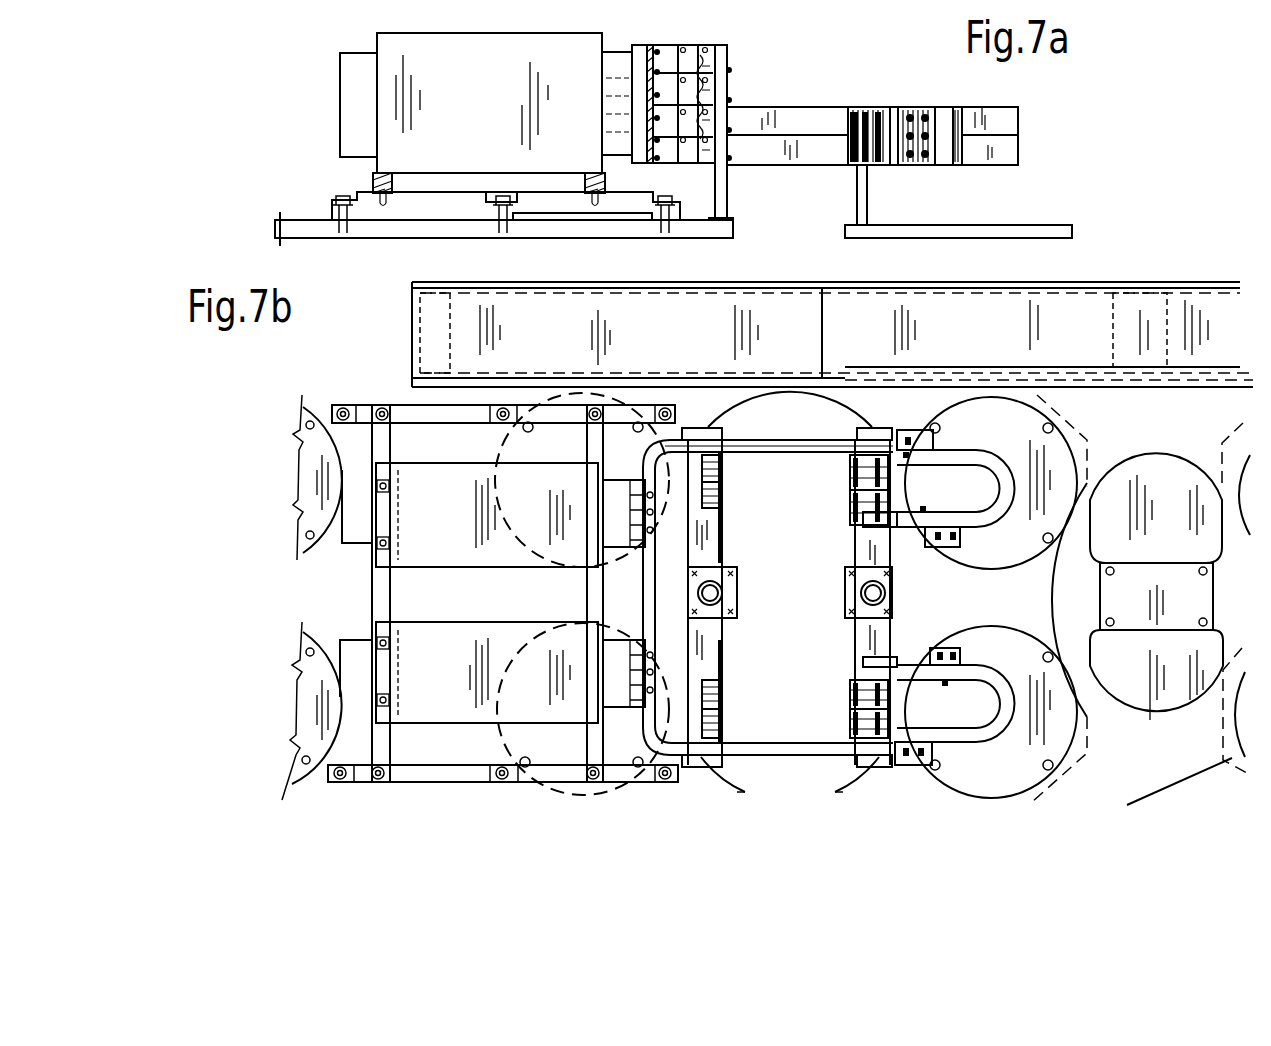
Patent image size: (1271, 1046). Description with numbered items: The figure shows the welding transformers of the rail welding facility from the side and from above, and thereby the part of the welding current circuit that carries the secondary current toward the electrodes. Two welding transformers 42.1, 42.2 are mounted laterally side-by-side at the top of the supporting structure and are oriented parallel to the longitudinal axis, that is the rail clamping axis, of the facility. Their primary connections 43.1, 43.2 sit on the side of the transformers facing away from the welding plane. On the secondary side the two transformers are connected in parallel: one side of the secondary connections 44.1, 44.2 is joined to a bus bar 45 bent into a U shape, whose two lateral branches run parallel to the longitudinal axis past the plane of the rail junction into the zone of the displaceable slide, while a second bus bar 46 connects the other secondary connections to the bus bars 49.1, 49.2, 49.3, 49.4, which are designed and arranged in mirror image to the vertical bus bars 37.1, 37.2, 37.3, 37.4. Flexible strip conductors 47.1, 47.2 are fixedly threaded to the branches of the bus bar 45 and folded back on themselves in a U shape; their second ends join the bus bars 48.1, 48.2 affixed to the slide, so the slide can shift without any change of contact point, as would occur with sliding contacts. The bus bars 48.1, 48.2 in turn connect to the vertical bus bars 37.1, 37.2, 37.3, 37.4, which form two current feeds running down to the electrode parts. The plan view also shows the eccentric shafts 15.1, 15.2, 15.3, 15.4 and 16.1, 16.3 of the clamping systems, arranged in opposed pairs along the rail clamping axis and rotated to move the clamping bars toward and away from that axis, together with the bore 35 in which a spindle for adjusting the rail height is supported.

In FIG. 7B, the eccentric shaft 15.1 is at (295, 782).
In FIG. 7B, the eccentric shaft 15.2 is at (500, 735).
In FIG. 7B, the eccentric shaft 15.3 is at (305, 410).
In FIG. 7B, the eccentric shaft 15.4 is at (500, 447).
In FIG. 7B, the eccentric shaft 16.1 is at (998, 762).
In FIG. 7B, the eccentric shaft 16.3 is at (972, 400).
In FIG. 7B, the bore 35 is at (850, 586).
In FIG. 7A, the bus bar 37.1 is at (727, 58).
In FIG. 7B, the bus bar 37.1 is at (850, 723).
In FIG. 7B, the bus bar 37.2 is at (852, 693).
In FIG. 7B, the bus bar 37.3 is at (852, 497).
In FIG. 7B, the bus bar 37.4 is at (852, 463).
In FIG. 7A, the welding transformer 42.1 is at (510, 79).
In FIG. 7B, the welding transformer 42.1 is at (472, 657).
In FIG. 7B, the welding transformer 42.2 is at (467, 511).
In FIG. 7A, the primary connection 43.1 is at (358, 137).
In FIG. 7B, the primary connection 43.1 is at (357, 655).
In FIG. 7B, the primary connection 43.2 is at (357, 533).
In FIG. 7A, the secondary connection 44.1 is at (615, 67).
In FIG. 7B, the secondary connection 44.1 is at (613, 703).
In FIG. 7B, the secondary connection 44.2 is at (610, 500).
In FIG. 7A, the U-shaped bus bar 45 is at (805, 118).
In FIG. 7B, the U-shaped bus bar 45 is at (750, 440).
In FIG. 7A, the second bus bar 46 is at (693, 45).
In FIG. 7B, the flexible strip conductor 47.1 is at (963, 733).
In FIG. 7B, the flexible strip conductor 47.2 is at (993, 468).
In FIG. 7B, the bus bar 48.1 is at (868, 670).
In FIG. 7B, the bus bar 48.2 is at (870, 520).
In FIG. 7B, the bus bar 49.1 is at (722, 727).
In FIG. 7B, the bus bar 49.2 is at (722, 697).
In FIG. 7B, the bus bar 49.3 is at (712, 495).
In FIG. 7B, the bus bar 49.4 is at (722, 462).